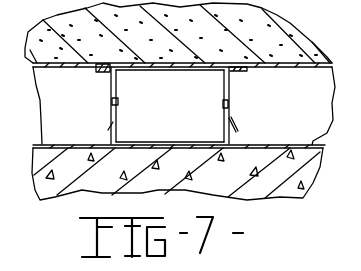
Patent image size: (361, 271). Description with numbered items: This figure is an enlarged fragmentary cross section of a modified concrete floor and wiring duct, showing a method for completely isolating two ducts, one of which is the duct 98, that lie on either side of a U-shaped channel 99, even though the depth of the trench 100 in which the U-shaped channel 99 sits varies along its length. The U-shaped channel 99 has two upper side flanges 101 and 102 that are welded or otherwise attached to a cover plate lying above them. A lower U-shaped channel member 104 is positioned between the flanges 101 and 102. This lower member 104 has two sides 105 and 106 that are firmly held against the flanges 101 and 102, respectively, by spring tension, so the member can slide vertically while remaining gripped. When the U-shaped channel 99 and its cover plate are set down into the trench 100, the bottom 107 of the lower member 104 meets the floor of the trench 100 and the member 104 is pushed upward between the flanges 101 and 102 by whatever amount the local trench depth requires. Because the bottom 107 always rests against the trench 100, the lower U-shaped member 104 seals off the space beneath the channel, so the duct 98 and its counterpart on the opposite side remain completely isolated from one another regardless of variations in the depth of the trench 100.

The duct 98 is at (313, 118).
The U-shaped channel 99 is at (234, 98).
The trench 100 is at (311, 139).
The upper side flange 101 is at (110, 94).
The upper side flange 102 is at (232, 72).
The lower U-shaped channel member 104 is at (237, 137).
The side 105 is at (121, 110).
The side 106 is at (222, 116).
The bottom 107 is at (193, 142).